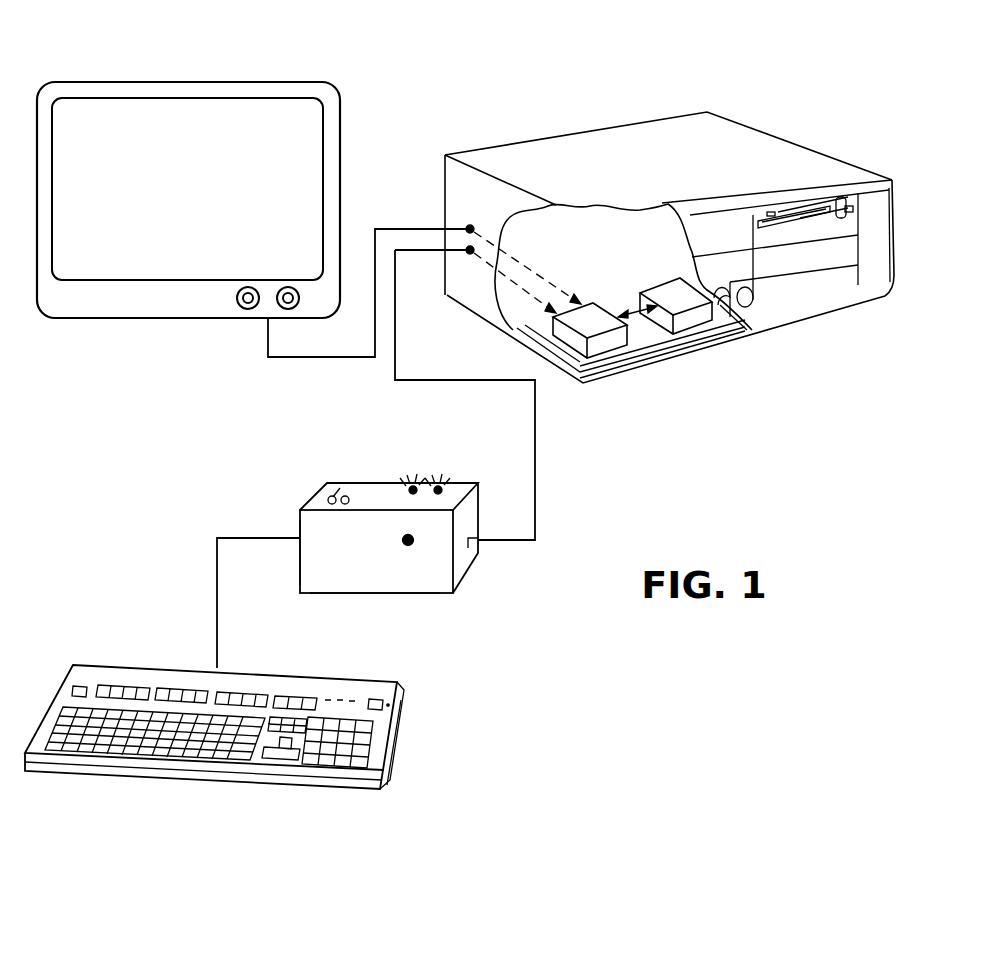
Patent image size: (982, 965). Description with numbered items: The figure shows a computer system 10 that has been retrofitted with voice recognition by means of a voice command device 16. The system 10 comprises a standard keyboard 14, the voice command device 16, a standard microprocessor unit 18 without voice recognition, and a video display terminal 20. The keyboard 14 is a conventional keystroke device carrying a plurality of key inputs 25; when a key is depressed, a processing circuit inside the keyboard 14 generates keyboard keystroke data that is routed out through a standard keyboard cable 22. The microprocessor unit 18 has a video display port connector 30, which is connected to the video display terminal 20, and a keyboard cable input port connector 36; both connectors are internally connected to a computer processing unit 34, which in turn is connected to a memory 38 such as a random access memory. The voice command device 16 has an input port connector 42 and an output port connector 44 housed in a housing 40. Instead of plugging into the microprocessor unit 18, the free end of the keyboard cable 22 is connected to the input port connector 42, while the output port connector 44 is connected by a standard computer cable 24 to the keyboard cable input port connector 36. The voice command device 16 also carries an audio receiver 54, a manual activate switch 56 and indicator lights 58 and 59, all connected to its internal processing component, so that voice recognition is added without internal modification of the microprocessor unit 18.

The computer system 10 is at (451, 56).
The keyboard 14 is at (120, 776).
The voice command device 16 is at (315, 594).
The microprocessor unit 18 is at (597, 129).
The video display terminal 20 is at (341, 119).
The keyboard cable 22 is at (217, 578).
The computer cable 24 is at (535, 525).
The key inputs 25 is at (80, 688).
The video display port connector 30 is at (466, 226).
The computer processing unit (CPU) 34 is at (594, 302).
The keyboard cable input port connector 36 is at (470, 254).
The memory 38 is at (655, 290).
The housing 40 is at (375, 594).
The input port connector 42 is at (300, 548).
The output port connector 44 is at (478, 553).
The audio receiver 54 is at (410, 546).
The manual activate switch 56 is at (300, 466).
The indicator light 58 is at (412, 486).
The indicator light 59 is at (443, 487).